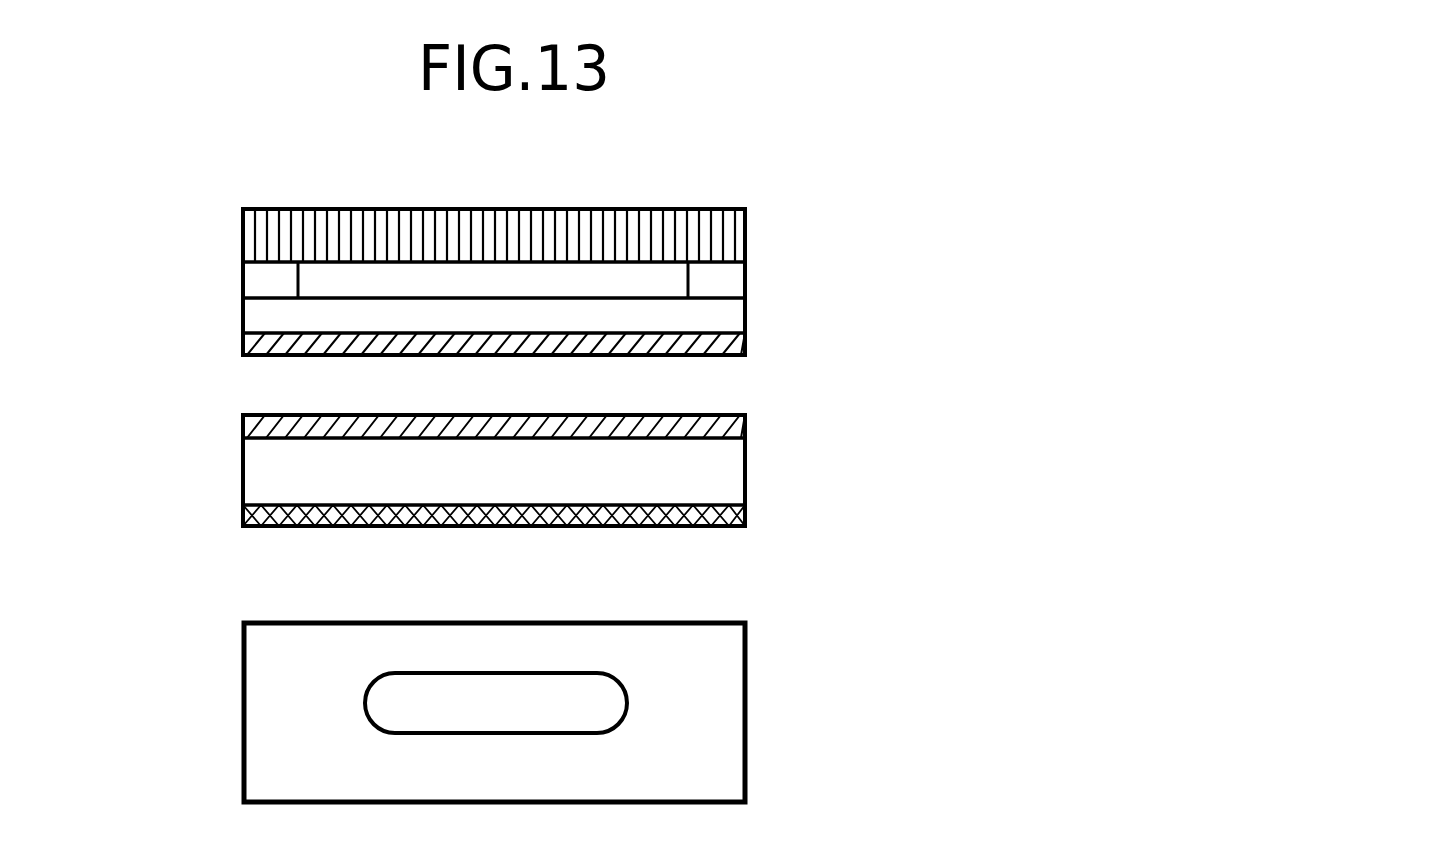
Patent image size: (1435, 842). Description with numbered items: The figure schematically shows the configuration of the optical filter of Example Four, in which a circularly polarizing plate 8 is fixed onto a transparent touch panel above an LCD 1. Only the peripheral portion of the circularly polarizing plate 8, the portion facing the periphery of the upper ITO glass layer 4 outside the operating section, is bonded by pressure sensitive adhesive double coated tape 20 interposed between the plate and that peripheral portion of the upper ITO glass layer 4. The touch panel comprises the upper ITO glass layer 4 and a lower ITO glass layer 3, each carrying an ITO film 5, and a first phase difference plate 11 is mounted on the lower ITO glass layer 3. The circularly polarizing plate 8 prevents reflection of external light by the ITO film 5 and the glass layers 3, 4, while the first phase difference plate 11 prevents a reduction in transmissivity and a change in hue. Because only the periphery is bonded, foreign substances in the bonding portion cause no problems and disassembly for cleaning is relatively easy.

The circularly polarizing plate 8 is at (745, 220).
The pressure sensitive adhesive double coated tape 20 is at (745, 277).
The upper ITO glass layer 4 is at (745, 318).
The ITO film 5 is at (745, 347).
The lower ITO glass layer 3 is at (745, 475).
The first phase difference plate 11 is at (745, 517).
The LCD 1 is at (745, 722).